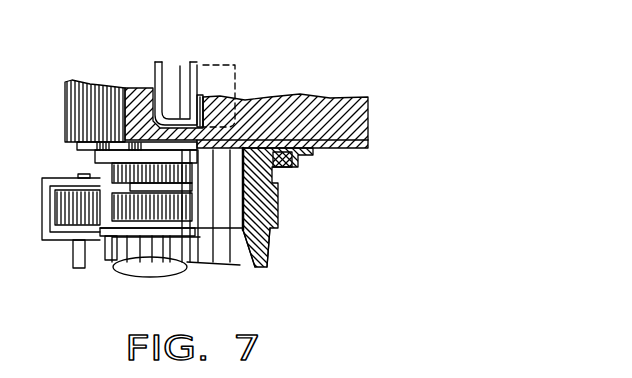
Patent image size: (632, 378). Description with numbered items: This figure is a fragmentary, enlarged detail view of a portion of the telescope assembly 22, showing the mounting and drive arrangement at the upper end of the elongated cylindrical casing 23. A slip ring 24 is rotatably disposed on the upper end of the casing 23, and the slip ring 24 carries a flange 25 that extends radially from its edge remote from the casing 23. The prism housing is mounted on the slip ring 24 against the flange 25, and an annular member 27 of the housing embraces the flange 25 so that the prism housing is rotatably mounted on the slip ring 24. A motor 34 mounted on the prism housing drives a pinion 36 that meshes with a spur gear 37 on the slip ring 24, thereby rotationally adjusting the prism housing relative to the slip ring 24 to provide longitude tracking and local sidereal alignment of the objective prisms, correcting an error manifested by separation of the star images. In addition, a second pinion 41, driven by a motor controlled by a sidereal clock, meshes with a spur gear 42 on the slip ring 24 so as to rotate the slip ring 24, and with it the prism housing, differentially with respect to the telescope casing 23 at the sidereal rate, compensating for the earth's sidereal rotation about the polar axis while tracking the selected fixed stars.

The telescope assembly 22 is at (302, 80).
The casing 23 is at (258, 238).
The slip ring 24 is at (278, 188).
The flange 25 is at (298, 162).
The annular member 27 is at (82, 148).
The motor 34 is at (185, 72).
The pinion 36 is at (187, 157).
The spur gear 37 is at (175, 172).
The pinion 41 is at (72, 222).
The spur gear 42 is at (157, 225).